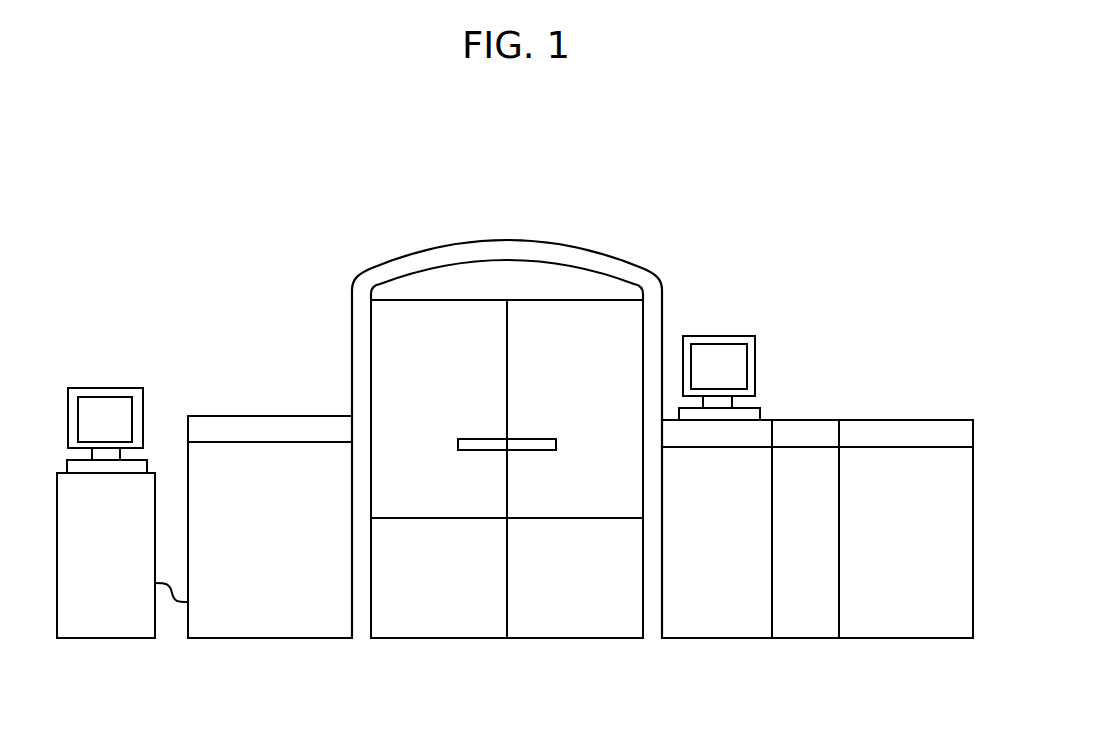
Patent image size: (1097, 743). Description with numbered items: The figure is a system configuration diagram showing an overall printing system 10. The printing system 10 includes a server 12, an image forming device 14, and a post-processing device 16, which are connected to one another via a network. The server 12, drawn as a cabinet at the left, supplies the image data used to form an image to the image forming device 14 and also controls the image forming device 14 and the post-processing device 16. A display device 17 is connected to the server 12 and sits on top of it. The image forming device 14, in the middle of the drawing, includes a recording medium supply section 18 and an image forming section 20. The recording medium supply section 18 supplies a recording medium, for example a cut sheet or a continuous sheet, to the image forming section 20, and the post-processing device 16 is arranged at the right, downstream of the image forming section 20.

The printing system 10 is at (698, 264).
The server 12 is at (116, 626).
The image forming device 14 is at (518, 240).
The post-processing device 16 is at (891, 625).
The display device 17 is at (93, 387).
The recording medium supply section 18 is at (278, 625).
The image forming section 20 is at (581, 625).